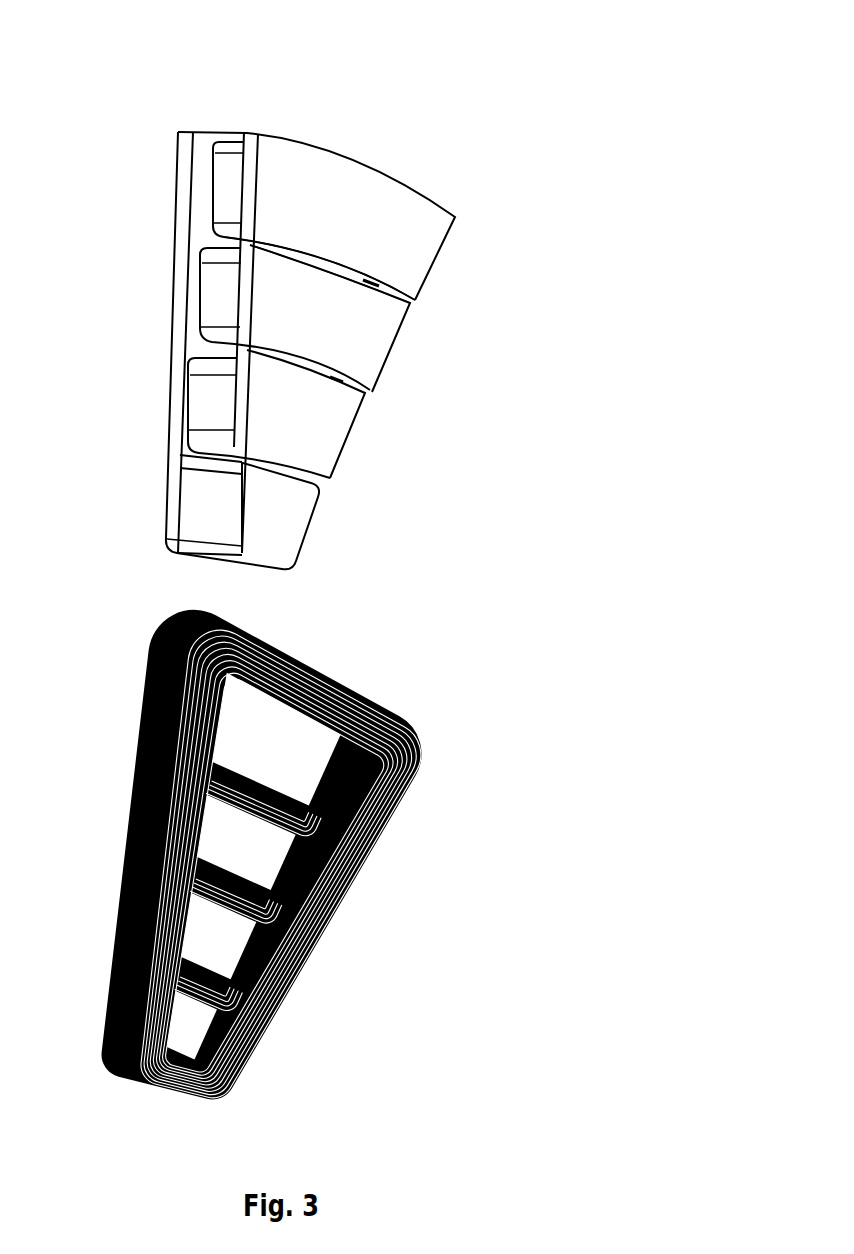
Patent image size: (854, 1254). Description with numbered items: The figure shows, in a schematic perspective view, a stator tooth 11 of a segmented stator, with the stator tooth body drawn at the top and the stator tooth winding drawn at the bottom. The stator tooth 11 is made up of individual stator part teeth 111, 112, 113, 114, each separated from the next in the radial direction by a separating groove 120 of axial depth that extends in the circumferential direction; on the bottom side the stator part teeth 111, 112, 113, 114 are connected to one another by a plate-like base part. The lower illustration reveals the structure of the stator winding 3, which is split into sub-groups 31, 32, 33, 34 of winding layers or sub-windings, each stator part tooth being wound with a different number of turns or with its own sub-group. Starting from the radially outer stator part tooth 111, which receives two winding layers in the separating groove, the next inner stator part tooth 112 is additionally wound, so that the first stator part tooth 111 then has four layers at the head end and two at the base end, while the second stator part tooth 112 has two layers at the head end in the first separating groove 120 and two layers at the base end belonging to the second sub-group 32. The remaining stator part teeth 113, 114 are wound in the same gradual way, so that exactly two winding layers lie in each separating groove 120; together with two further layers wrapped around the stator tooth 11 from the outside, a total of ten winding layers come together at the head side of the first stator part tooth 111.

The stator tooth 11 is at (300, 325).
The first stator part tooth 111 is at (232, 185).
The second stator part tooth 112 is at (225, 292).
The third stator part tooth 113 is at (212, 393).
The fourth stator part tooth 114 is at (200, 495).
The separating groove 120 is at (415, 303).
The stator winding 3 is at (252, 837).
The first sub-group of the stator winding 31 is at (237, 773).
The second sub-group of the stator winding 32 is at (217, 867).
The third sub-group of the stator winding 33 is at (200, 967).
The fourth sub-group of the stator winding 34 is at (172, 1053).